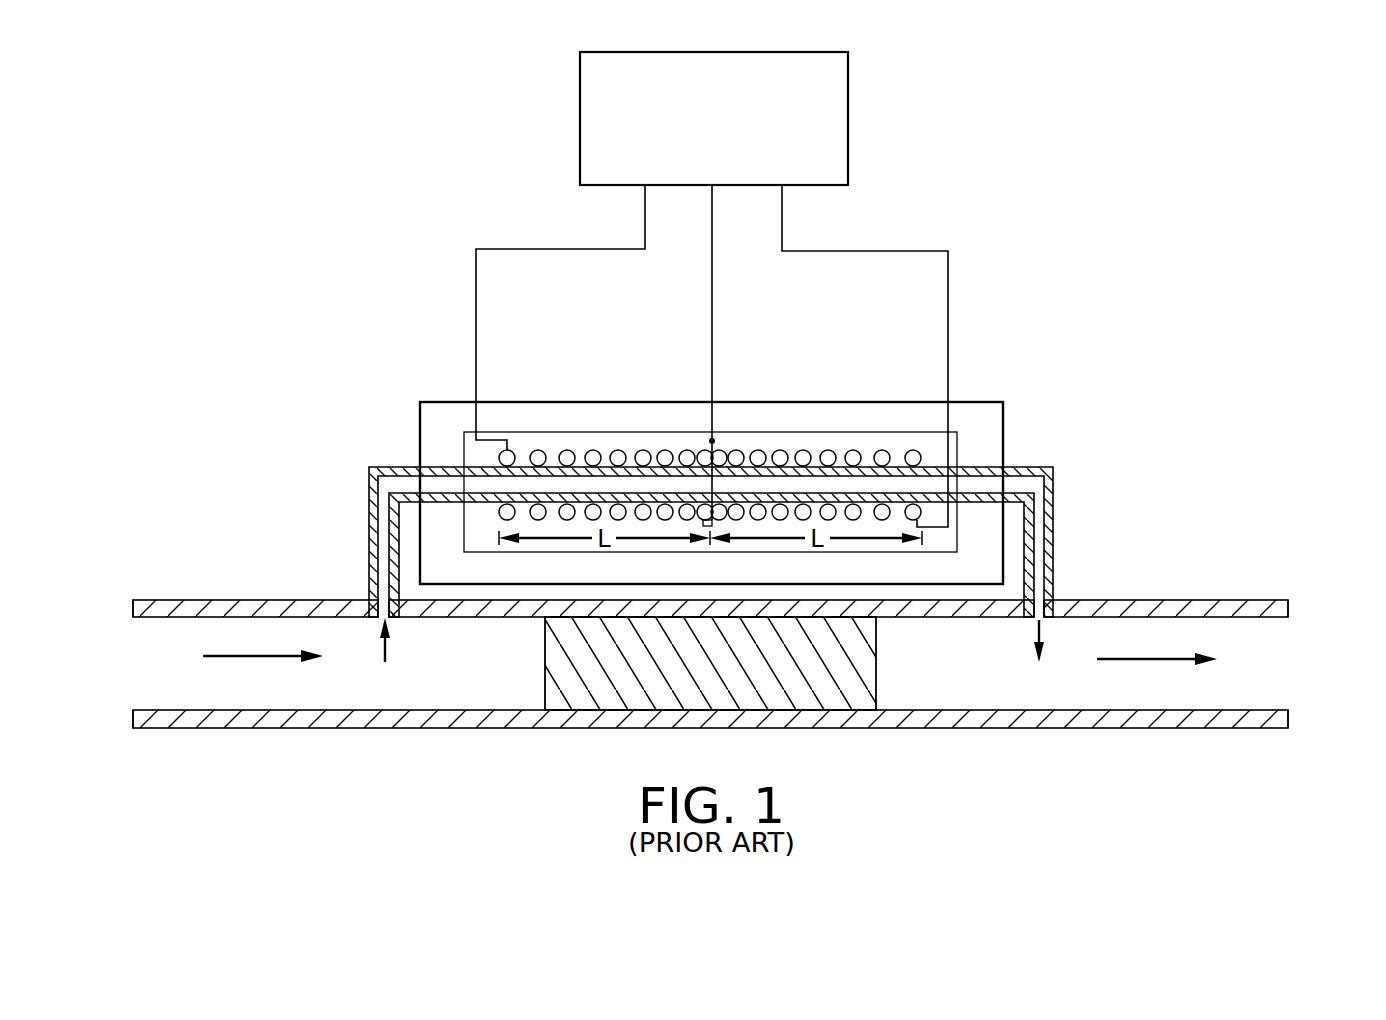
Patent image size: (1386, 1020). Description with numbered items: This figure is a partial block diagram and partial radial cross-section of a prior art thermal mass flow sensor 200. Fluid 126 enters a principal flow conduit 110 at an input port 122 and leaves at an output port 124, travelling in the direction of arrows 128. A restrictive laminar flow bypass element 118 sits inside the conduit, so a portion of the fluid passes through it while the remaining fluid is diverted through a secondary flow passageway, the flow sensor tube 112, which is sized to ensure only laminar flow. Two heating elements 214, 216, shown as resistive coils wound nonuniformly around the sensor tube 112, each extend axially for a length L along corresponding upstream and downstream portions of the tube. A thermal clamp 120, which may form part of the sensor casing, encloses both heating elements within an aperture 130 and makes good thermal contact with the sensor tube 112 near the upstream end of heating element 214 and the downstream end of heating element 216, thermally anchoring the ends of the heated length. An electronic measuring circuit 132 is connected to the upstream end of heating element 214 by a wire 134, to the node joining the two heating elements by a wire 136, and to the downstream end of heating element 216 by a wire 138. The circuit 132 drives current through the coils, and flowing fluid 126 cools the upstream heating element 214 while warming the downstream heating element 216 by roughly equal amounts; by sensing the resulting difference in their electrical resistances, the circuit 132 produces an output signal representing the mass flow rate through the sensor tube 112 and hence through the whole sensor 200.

The principal flow conduit 110 is at (988, 730).
The flow sensor tube 112 is at (1057, 512).
The laminar flow bypass element 118 is at (878, 667).
The thermal clamp 120 is at (983, 403).
The input port 122 is at (147, 661).
The output port 124 is at (1272, 665).
The fluid 126 is at (449, 678).
The arrows 128 is at (263, 662).
The aperture 130 is at (650, 432).
The electronic measuring circuit 132 is at (695, 132).
The wire 134 is at (475, 322).
The wire 136 is at (713, 323).
The wire 138 is at (950, 277).
The mass flow sensor 200 is at (446, 782).
The upstream heating element 214 is at (538, 450).
The downstream heating element 216 is at (882, 450).